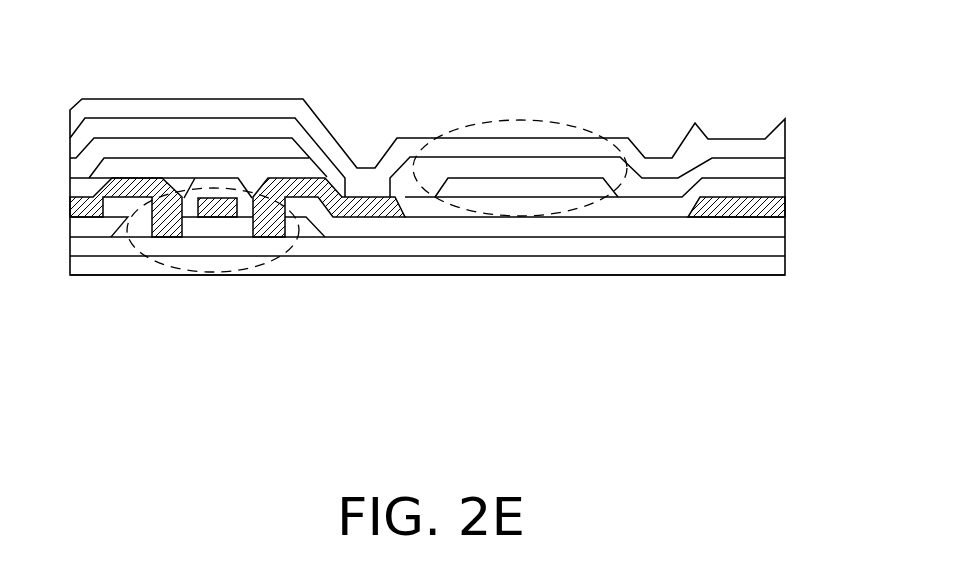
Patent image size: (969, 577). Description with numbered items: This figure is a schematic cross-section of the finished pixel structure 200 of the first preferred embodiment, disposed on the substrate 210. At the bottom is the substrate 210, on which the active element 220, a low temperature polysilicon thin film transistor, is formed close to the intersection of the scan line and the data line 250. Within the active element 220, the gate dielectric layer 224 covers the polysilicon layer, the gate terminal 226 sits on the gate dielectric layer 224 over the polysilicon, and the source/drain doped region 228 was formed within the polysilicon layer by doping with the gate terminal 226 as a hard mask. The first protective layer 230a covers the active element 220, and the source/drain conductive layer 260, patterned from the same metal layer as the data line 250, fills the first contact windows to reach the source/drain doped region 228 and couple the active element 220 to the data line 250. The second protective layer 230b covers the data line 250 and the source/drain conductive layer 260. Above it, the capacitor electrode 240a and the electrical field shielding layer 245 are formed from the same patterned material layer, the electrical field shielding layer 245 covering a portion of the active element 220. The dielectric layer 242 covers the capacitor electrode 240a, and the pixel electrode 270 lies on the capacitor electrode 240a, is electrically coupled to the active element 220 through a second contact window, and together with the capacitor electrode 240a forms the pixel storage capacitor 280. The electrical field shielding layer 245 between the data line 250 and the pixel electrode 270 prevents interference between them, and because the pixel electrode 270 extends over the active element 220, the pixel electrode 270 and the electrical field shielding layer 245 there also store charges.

The pixel structure 200 is at (862, 447).
The substrate 210 is at (769, 264).
The active element 220 is at (161, 262).
The gate dielectric layer 224 is at (705, 248).
The gate terminal 226 is at (240, 212).
The source/drain doped region 228 is at (262, 238).
The first protective layer 230a is at (641, 223).
The second protective layer 230b is at (523, 205).
The capacitor electrode 240a is at (483, 188).
The dielectric layer 242 is at (572, 167).
The electrical field shielding layer 245 is at (82, 165).
The data line 250 is at (767, 212).
The source/drain conductive layer 260 is at (277, 185).
The pixel electrode 270 is at (442, 143).
The pixel storage capacitor 280 is at (608, 200).